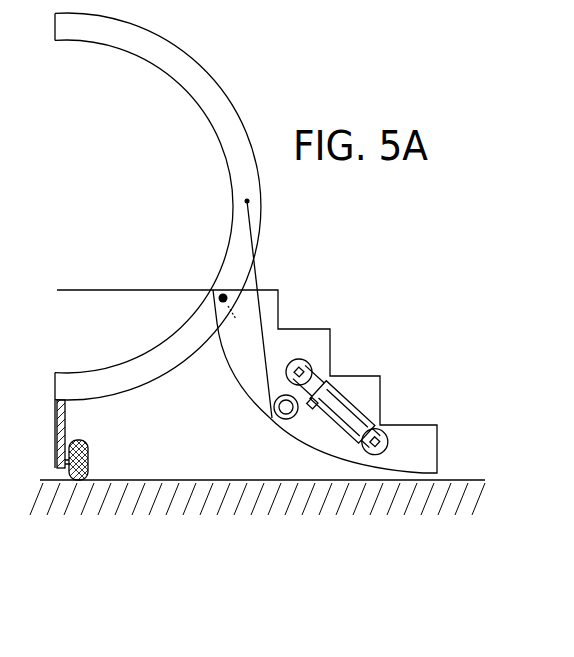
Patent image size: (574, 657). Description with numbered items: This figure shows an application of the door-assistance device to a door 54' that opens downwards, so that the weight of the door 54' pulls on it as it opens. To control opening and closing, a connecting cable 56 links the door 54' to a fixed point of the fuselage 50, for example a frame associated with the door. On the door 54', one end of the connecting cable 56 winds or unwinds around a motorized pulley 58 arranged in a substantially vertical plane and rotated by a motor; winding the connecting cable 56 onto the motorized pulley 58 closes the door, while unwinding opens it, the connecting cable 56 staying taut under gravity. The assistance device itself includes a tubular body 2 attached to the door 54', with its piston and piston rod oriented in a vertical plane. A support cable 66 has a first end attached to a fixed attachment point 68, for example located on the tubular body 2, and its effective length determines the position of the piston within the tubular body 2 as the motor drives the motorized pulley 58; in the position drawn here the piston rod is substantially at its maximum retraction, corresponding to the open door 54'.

The fuselage 50 is at (191, 79).
The connecting cable 56 is at (258, 282).
The door 54' is at (300, 381).
The motorized pulley 58 is at (276, 424).
The support cable 66 is at (326, 441).
The tubular body 2 is at (352, 410).
The fixed attachment point 68 is at (320, 398).